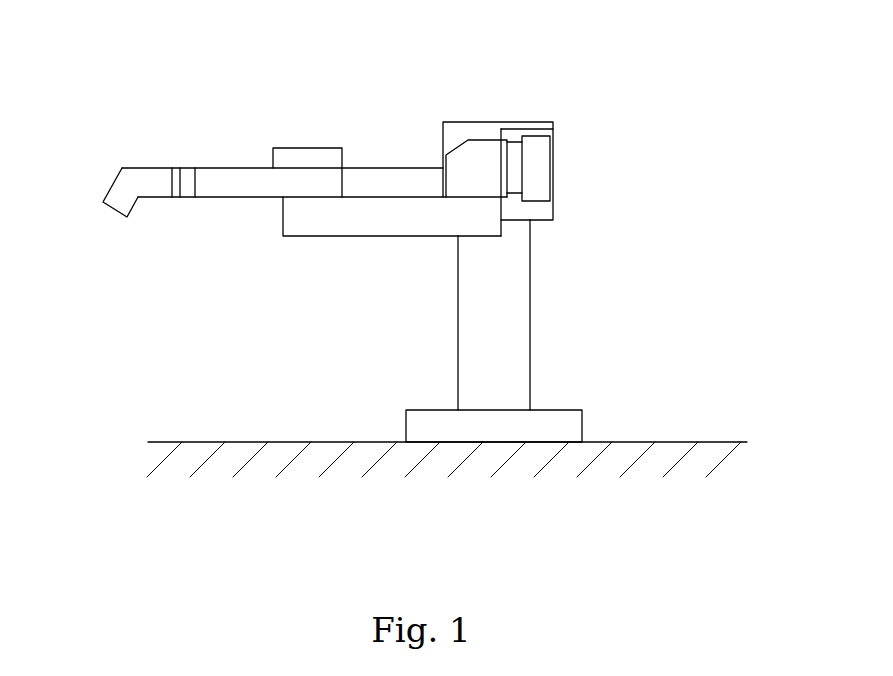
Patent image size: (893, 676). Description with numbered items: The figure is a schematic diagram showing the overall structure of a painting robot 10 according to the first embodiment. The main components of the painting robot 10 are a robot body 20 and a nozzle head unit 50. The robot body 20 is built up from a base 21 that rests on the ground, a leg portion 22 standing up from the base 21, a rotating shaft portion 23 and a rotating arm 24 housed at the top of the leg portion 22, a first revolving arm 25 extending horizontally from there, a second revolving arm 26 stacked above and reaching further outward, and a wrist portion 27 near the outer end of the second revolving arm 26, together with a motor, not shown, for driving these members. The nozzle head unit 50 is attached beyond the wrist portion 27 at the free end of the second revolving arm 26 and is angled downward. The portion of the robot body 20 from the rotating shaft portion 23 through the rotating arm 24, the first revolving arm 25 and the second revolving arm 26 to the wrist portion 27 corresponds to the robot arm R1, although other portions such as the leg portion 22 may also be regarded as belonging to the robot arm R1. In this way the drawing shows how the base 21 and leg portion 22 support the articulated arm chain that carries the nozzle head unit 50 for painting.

The painting robot 10 is at (338, 97).
The robot body 20 is at (578, 167).
The base 21 is at (495, 428).
The leg portion 22 is at (517, 296).
The rotating shaft portion 23 is at (515, 148).
The rotating arm 24 is at (467, 140).
The first revolving arm 25 is at (411, 230).
The second revolving arm 26 is at (247, 177).
The wrist portion 27 is at (185, 197).
The nozzle head unit 50 is at (120, 190).
The robot arm R1 is at (268, 268).